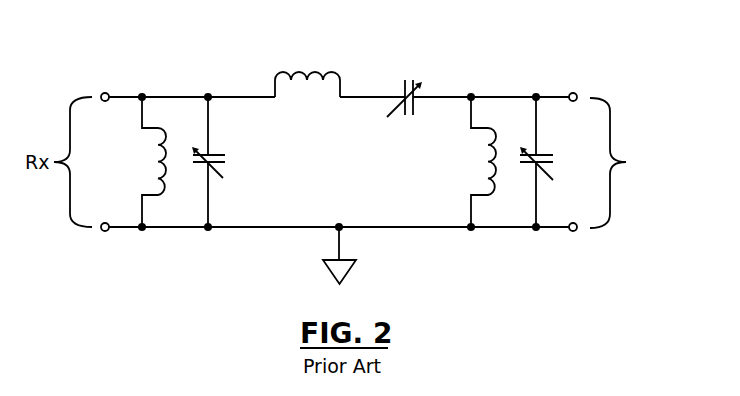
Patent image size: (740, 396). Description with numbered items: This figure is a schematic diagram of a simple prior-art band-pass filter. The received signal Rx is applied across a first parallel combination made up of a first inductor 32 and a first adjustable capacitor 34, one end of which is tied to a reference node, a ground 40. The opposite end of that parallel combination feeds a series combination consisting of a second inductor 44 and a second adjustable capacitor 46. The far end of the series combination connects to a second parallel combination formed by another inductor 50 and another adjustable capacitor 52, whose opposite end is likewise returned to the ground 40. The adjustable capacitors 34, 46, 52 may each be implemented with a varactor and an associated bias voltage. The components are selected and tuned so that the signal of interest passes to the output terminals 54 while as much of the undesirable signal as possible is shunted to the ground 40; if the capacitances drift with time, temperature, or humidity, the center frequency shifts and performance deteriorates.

The first inductor 32 is at (158, 150).
The first adjustable capacitor 34 is at (225, 150).
The ground 40 is at (333, 258).
The second inductor 44 is at (277, 74).
The second adjustable capacitor 46 is at (403, 81).
The second inductor 50 is at (488, 150).
The second adjustable capacitor 52 is at (546, 153).
The output terminals 54 is at (622, 163).